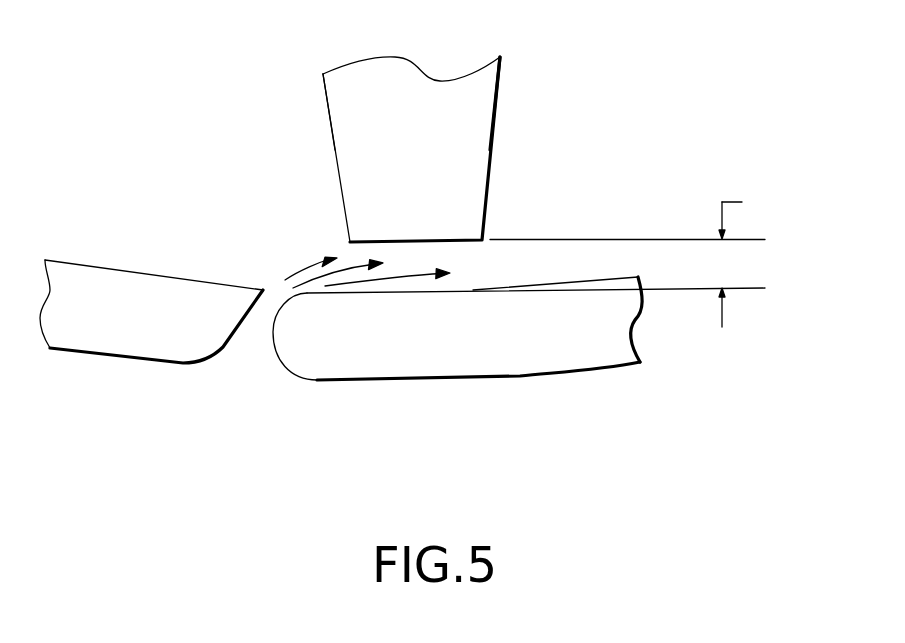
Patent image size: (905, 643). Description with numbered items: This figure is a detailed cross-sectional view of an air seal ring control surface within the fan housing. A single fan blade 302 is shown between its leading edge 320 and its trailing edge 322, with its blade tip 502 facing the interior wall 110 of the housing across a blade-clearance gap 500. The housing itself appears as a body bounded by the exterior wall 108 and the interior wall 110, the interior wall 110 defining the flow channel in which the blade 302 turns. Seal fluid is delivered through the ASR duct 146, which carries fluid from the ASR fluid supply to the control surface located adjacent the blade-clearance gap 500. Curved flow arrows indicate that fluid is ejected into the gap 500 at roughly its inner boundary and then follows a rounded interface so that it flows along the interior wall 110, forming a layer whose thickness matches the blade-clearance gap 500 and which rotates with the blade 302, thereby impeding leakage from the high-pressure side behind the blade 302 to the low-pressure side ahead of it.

The blade 302 is at (512, 139).
The trailing edge 322 is at (325, 97).
The leading edge 320 is at (498, 82).
The blade tip 502 is at (440, 242).
The blade-clearance gap 500 is at (542, 255).
The interior wall 110 is at (617, 278).
The exterior wall 108 is at (593, 375).
The ASR duct 146 is at (236, 351).